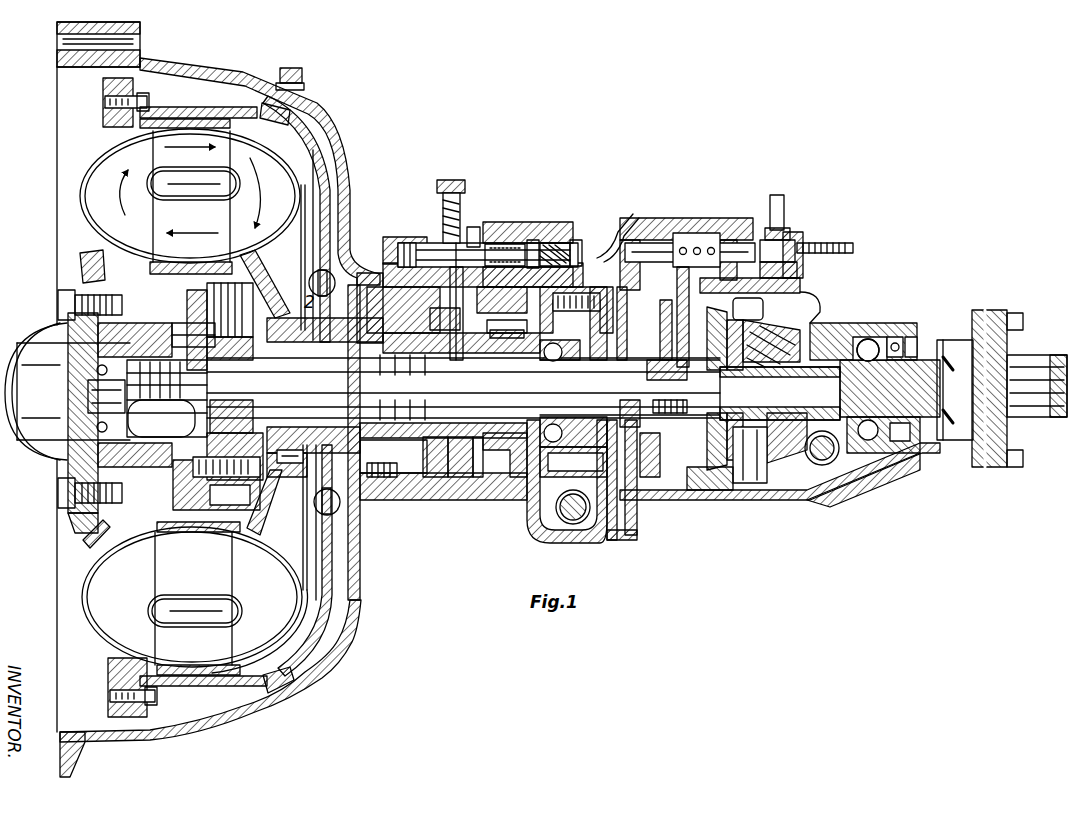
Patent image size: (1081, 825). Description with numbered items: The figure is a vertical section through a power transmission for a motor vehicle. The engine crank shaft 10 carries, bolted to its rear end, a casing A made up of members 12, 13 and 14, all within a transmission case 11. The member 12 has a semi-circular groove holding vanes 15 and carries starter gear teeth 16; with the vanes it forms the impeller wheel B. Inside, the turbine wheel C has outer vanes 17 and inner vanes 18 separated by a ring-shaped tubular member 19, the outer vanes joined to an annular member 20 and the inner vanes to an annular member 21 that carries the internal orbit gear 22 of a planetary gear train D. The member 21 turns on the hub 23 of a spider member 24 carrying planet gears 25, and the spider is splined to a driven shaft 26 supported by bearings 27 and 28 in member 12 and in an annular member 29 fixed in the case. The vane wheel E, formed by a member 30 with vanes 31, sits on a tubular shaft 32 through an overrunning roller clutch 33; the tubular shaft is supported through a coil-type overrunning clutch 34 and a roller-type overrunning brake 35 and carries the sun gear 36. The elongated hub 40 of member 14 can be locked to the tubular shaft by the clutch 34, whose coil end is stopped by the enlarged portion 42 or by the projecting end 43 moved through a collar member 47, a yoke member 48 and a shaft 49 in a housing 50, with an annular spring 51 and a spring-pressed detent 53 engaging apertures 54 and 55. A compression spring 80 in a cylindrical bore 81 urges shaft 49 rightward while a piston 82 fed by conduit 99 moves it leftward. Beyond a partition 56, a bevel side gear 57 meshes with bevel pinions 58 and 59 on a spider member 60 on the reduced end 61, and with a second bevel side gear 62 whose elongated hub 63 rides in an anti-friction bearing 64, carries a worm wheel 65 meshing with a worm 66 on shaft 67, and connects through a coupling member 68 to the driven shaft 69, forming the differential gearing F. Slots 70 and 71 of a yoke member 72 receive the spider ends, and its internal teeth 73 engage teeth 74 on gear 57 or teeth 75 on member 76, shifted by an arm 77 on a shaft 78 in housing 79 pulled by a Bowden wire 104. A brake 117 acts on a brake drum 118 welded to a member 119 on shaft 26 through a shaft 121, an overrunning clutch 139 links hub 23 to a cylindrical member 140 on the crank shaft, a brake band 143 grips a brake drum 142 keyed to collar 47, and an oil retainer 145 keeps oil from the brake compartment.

The crank shaft 10 is at (40, 340).
The transmission case 11 is at (358, 620).
The casing member 12 is at (90, 260).
The casing member 13 is at (332, 200).
The casing member 14 is at (354, 520).
The vanes 15 is at (93, 208).
The gear teeth 16 is at (108, 78).
The vanes 17 is at (180, 118).
The vanes 18 is at (200, 226).
The ring-shaped tubular member 19 is at (238, 160).
The annular member 20 is at (262, 112).
The annular member 21 is at (205, 228).
The internal orbit gear 22 is at (250, 262).
The hub 23 is at (175, 400).
The spider member 24 is at (198, 520).
The planet gears 25 is at (258, 248).
The driven shaft 26 is at (495, 360).
The bearing 27 is at (95, 372).
The bearing 28 is at (573, 433).
The annular member 29 is at (573, 462).
The member 30 is at (316, 232).
The vanes 31 is at (331, 164).
The tubular shaft 32 is at (305, 530).
The overrunning roller clutch 33 is at (288, 468).
The coil-type overrunning clutch 34 is at (400, 500).
The roller-type overrunning brake 35 is at (512, 480).
The sun gear 36 is at (240, 410).
The elongated hub 40 is at (375, 480).
The enlarged portion 42 is at (312, 360).
The outwardly projecting end 43 is at (345, 360).
The collar member 47 is at (478, 480).
The yoke member 48 is at (478, 240).
The shaft 49 is at (405, 240).
The housing 50 is at (578, 238).
The annular spring 51 is at (430, 360).
The spring-pressed detent 53 is at (462, 200).
The aperture 54 is at (445, 230).
The aperture 55 is at (490, 220).
The partition 56 is at (705, 450).
The bevel side gear 57 is at (735, 460).
The bevel pinion 58 is at (805, 318).
The bevel pinion 59 is at (770, 462).
The spider member 60 is at (748, 485).
The reduced end 61 is at (770, 388).
The bevel side gear 62 is at (872, 338).
The elongated hub 63 is at (940, 440).
The anti-friction bearing 64 is at (912, 337).
The worm wheel 65 is at (897, 337).
The worm 66 is at (880, 462).
The shaft 67 is at (840, 500).
The coupling member 68 is at (985, 310).
The driven shaft 69 is at (1030, 352).
The elongated slot 70 is at (800, 305).
The elongated slot 71 is at (830, 468).
The yoke member 72 is at (710, 490).
The internal gear teeth 73 is at (668, 325).
The teeth 74 is at (672, 500).
The teeth 75 is at (645, 350).
The member 76 is at (650, 420).
The shifting arm 77 is at (700, 245).
The shaft 78 is at (680, 232).
The housing 79 is at (645, 240).
The compression spring 80 is at (505, 240).
The cylindrical bore 81 is at (533, 240).
The fluid-actuated piston 82 is at (560, 240).
The conduit 99 is at (630, 212).
The Bowden wire 104 is at (853, 240).
The brake 117 is at (535, 530).
The brake drum 118 is at (595, 338).
The member 119 is at (560, 370).
The shaft 121 is at (590, 520).
The coil-type overrunning clutch 139 is at (135, 470).
The cylindrical member 140 is at (140, 310).
The brake drum 142 is at (460, 480).
The brake band 143 is at (432, 480).
The oil retainer 145 is at (368, 275).
The casing A is at (867, 246).
The impeller wheel B is at (98, 183).
The turbine wheel C is at (180, 135).
The planetary gear train D is at (325, 397).
The vane wheel E is at (287, 150).
The differential gearing F is at (800, 470).